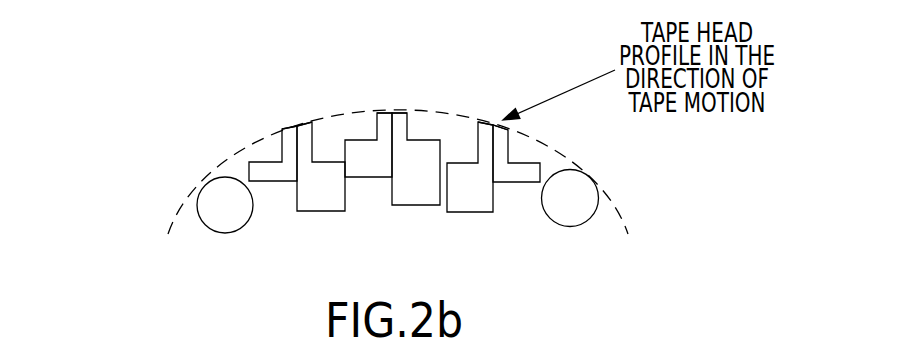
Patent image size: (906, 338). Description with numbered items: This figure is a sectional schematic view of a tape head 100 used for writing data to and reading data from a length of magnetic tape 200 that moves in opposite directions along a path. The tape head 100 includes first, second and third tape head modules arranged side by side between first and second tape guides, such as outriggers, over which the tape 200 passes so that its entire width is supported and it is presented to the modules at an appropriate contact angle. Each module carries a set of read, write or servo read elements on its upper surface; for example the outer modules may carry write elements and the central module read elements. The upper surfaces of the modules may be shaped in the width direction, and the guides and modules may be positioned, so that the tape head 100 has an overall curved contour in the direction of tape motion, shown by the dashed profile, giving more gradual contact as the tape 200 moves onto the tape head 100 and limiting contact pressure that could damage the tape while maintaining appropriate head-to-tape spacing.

The tape head 100 is at (148, 138).
The magnetic tape 200 is at (145, 233).